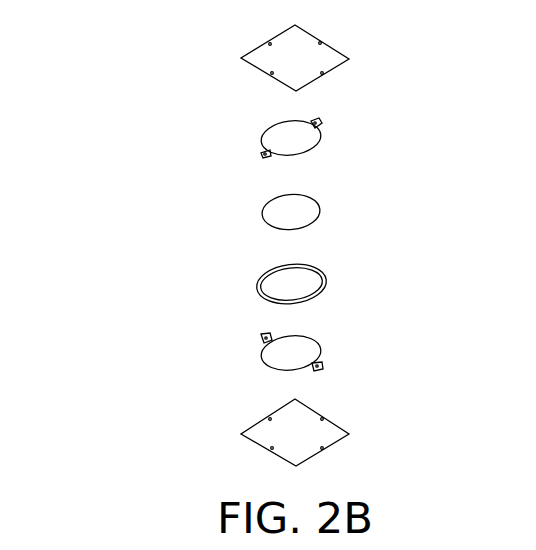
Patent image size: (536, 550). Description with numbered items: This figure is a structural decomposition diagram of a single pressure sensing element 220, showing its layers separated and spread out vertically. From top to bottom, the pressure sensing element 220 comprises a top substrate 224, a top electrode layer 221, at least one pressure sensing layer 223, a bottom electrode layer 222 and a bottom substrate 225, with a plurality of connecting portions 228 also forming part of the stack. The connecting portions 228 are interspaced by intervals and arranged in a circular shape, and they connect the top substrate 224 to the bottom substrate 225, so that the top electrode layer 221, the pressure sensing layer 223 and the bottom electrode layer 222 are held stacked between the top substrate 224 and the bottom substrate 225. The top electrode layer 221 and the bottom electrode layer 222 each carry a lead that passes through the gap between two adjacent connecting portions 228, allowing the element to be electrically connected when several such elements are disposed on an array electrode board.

The pressure sensing element 220 is at (88, 24).
The top substrate 224 is at (327, 49).
The top electrode layer 221 is at (308, 141).
The pressure sensing layer 223 is at (308, 212).
The connecting portions 228 is at (325, 286).
The bottom electrode layer 222 is at (305, 348).
The bottom substrate 225 is at (327, 427).